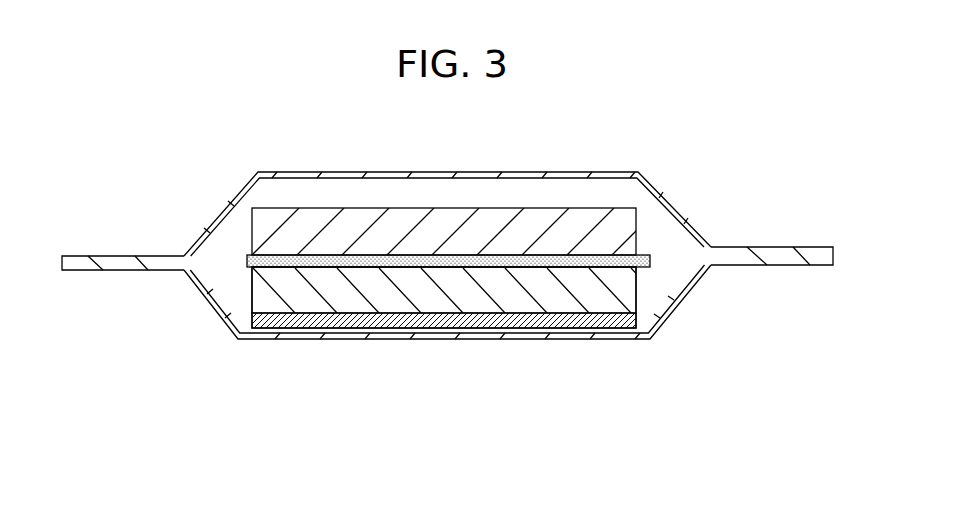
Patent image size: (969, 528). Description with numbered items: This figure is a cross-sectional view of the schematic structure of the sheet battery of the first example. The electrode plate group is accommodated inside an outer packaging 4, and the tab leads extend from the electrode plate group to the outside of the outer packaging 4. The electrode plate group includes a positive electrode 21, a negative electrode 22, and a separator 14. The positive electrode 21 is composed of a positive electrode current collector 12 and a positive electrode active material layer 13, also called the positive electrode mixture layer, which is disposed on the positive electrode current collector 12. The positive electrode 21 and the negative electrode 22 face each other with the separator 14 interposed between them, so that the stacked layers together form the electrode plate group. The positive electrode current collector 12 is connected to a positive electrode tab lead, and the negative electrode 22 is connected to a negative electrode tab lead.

The outer packaging 4 is at (133, 265).
The positive electrode current collector 12 is at (390, 321).
The positive electrode active material layer 13 is at (457, 296).
The separator 14 is at (568, 267).
The positive electrode 21 is at (466, 415).
The negative electrode 22 is at (445, 218).